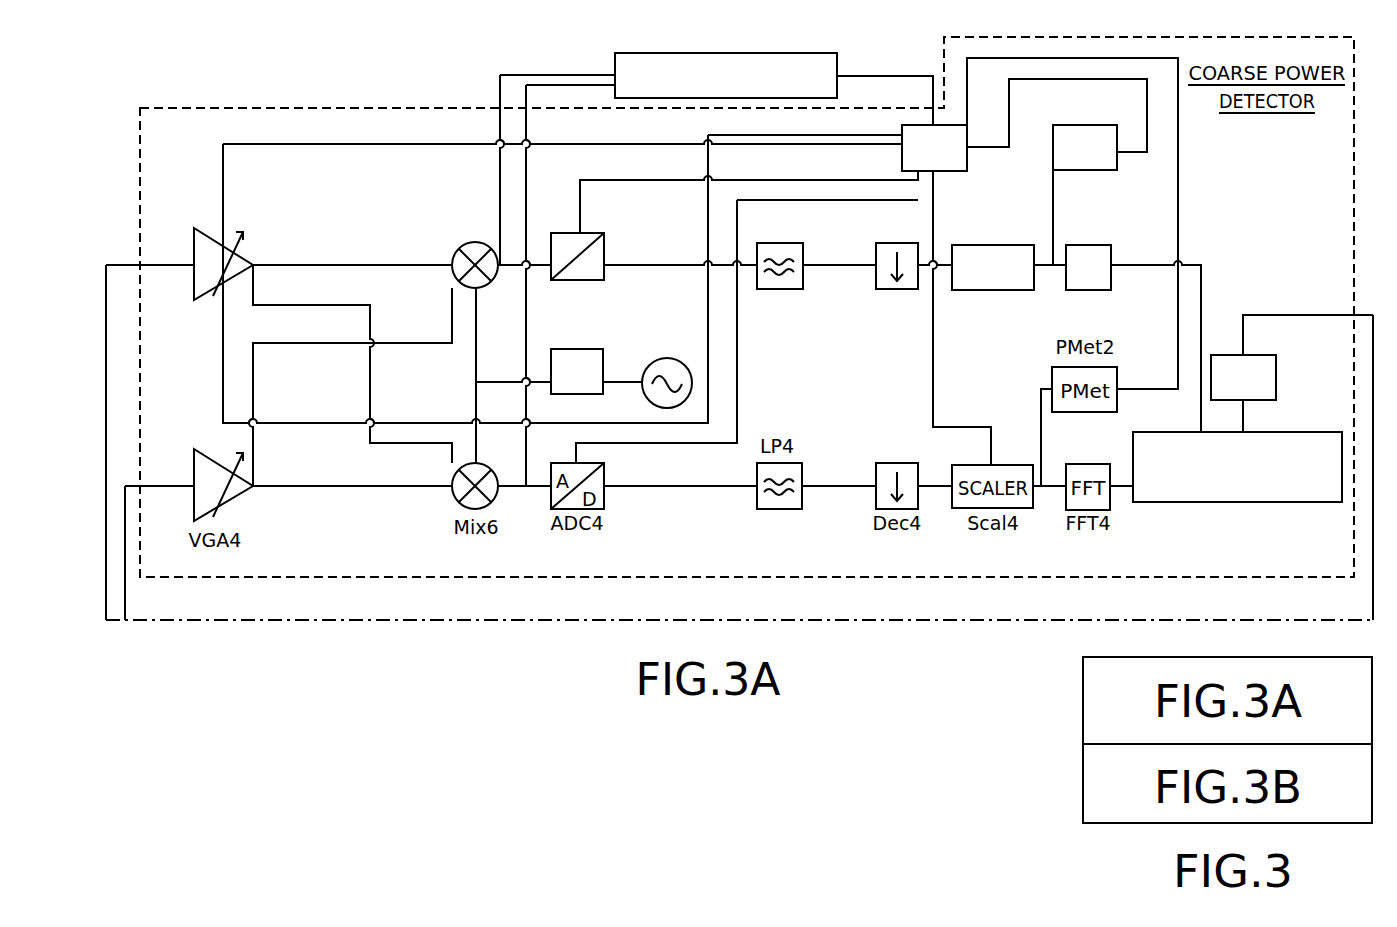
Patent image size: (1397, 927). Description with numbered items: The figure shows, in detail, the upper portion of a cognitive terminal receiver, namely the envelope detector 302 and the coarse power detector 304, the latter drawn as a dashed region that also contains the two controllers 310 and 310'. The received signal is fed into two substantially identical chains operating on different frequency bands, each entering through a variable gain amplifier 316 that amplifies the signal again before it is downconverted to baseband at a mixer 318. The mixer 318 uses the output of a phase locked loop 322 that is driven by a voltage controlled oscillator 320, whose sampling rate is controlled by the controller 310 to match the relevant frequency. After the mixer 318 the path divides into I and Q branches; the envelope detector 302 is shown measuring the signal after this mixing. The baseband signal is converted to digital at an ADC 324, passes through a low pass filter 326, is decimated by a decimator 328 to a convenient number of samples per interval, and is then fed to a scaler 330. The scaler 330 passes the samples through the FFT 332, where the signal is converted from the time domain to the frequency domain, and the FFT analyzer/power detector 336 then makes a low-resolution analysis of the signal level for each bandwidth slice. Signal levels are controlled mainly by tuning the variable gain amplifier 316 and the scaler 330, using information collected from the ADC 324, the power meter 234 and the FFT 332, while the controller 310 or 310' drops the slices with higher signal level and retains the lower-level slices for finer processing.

The envelope detector 302 is at (727, 53).
The coarse power detector 304 is at (338, 108).
The controller 310' is at (914, 104).
The variable gain amplifier 316 is at (194, 240).
The mixer 318 is at (455, 258).
The voltage controlled oscillator 320 is at (690, 366).
The phase locked loop 322 is at (560, 349).
The ADC 324 is at (606, 246).
The low pass filter 326 is at (775, 290).
The decimator 328 is at (910, 243).
The scaler 330 is at (975, 245).
The FFT 332 is at (1111, 262).
The power meter 234 is at (1073, 172).
The controller 310 is at (1264, 367).
The FFT analyzer/power detector 336 is at (1287, 432).